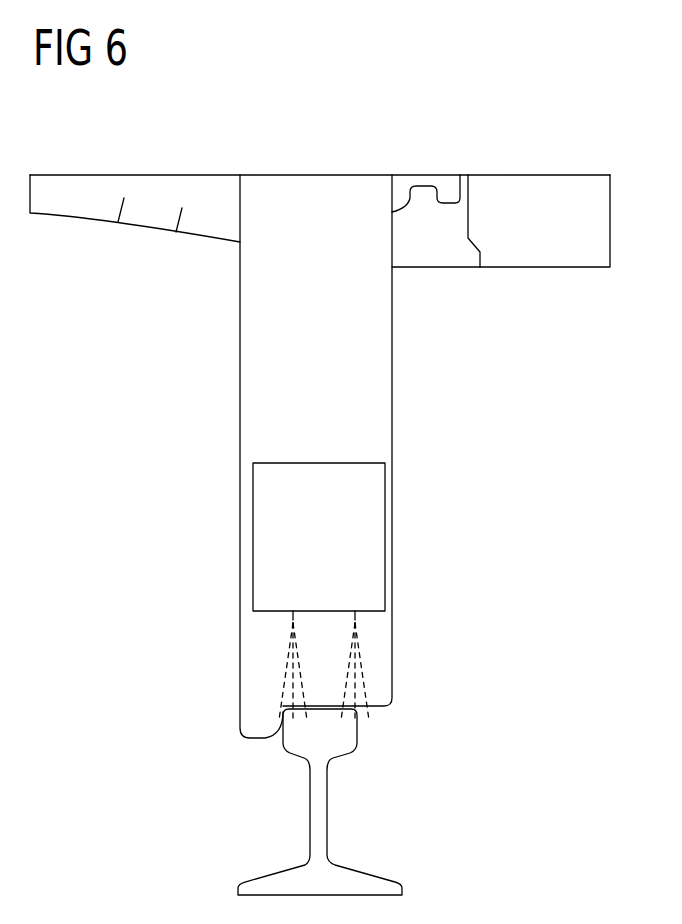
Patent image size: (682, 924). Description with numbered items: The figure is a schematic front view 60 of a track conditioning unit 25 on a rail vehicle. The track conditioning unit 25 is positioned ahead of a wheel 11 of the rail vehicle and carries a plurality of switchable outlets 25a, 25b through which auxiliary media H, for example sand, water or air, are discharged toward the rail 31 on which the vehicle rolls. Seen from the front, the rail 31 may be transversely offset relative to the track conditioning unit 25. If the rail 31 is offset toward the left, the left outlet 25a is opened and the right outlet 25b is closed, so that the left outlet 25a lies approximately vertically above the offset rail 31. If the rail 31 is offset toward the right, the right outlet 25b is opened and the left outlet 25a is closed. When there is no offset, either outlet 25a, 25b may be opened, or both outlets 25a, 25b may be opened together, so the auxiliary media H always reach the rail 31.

The front view 60 is at (320, 401).
The wheel 11 is at (315, 177).
The track conditioning unit 25 is at (318, 463).
The left outlet 25a is at (283, 612).
The right outlet 25b is at (364, 612).
The auxiliary media H is at (282, 680).
The rail 31 is at (322, 810).